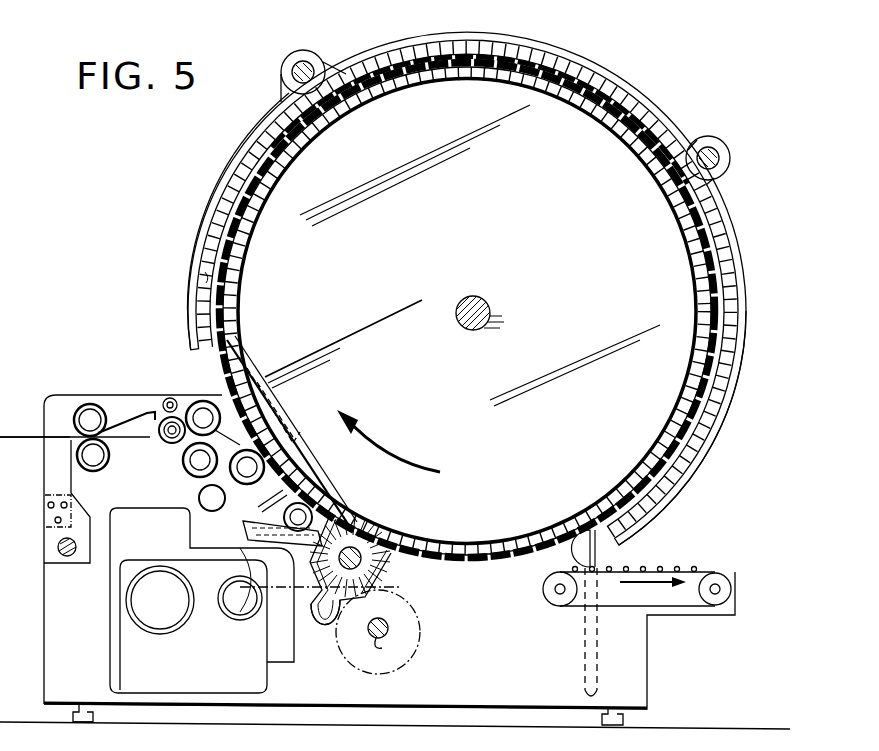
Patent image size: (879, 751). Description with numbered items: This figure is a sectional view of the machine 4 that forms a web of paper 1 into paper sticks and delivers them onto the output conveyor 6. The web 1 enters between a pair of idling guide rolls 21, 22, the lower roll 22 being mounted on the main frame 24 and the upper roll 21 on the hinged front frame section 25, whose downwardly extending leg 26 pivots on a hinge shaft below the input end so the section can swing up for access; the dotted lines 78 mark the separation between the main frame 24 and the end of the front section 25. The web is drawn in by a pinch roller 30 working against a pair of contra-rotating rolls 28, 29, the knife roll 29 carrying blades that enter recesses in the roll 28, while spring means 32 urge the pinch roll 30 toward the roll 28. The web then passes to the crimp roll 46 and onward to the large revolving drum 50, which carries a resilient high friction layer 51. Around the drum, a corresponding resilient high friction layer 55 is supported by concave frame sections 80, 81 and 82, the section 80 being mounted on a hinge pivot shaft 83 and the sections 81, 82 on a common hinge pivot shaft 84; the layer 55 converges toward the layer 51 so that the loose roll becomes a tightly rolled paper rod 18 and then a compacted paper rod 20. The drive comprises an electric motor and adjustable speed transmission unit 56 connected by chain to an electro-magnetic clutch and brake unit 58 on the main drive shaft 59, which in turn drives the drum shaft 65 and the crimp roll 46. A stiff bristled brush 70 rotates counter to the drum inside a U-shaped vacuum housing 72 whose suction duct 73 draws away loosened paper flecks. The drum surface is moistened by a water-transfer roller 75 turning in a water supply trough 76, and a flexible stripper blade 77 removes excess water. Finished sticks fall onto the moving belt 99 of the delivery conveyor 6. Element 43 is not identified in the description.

The web of paper 1 is at (28, 437).
The machine 4 is at (215, 172).
The output conveyor 6 is at (666, 560).
The tightly rolled paper rod 18 is at (483, 52).
The compacted paper rod 20 is at (722, 408).
The upper idling guide roll 21 is at (88, 404).
The lower idling guide roll 22 is at (86, 471).
The main frame 24 is at (67, 607).
The hinged front frame section 25 is at (126, 401).
The downwardly extending leg 26 is at (62, 469).
The recessed roll 28 is at (200, 400).
The knife roll 29 is at (183, 466).
The pinch roller 30 is at (163, 440).
The spring means 32 is at (166, 400).
The housing block 43 is at (196, 518).
The crimp roll 46 is at (270, 456).
The revolving drum 50 is at (466, 381).
The resilient high friction layer 51 is at (246, 240).
The resilient high friction layer 55 is at (204, 273).
The electric motor and adjustable speed transmission unit 56 is at (216, 622).
The electro-magnetic clutch and brake unit 58 is at (414, 658).
The main drive shaft 59 is at (394, 633).
The drum shaft 65 is at (473, 296).
The stiff bristled brush 70 is at (368, 534).
The U-shaped vacuum housing 72 is at (386, 573).
The suction source duct 73 is at (330, 626).
The water-transfer roller 75 is at (327, 517).
The water supply trough 76 is at (243, 532).
The flexible stripper blade 77 is at (308, 506).
The dotted lines 78 is at (279, 400).
The second concave frame section 80 is at (222, 188).
The third concave frame section 81 is at (466, 48).
The fourth concave frame section 82 is at (734, 318).
The hinge pivot shaft 83 is at (292, 78).
The common hinge pivot shaft 84 is at (712, 148).
The moving belt 99 is at (708, 572).